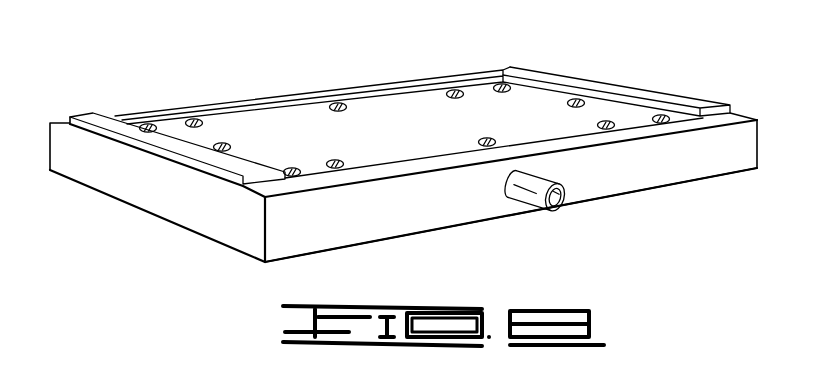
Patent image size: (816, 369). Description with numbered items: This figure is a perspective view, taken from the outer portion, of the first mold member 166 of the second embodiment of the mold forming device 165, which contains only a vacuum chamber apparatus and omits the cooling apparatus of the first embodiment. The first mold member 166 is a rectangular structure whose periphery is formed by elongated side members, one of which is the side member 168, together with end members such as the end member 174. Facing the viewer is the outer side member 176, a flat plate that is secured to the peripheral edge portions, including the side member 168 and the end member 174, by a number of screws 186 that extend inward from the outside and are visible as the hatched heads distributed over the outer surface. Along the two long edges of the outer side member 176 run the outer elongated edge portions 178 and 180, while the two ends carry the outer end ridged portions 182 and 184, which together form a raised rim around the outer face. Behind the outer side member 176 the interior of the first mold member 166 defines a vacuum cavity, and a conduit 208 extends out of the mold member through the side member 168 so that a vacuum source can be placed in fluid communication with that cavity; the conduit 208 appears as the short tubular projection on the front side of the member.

The mold forming device 165 is at (104, 50).
The first mold member 166 is at (81, 106).
The side member 168 is at (372, 227).
The end member 174 is at (177, 212).
The outer side member 176 is at (381, 111).
The outer elongated edge portion 178 is at (396, 172).
The outer elongated edge portion 180 is at (278, 99).
The outer end ridged portion 182 is at (587, 86).
The outer end ridged portion 184 is at (108, 125).
The screw 186 is at (219, 142).
The conduit 208 is at (534, 190).